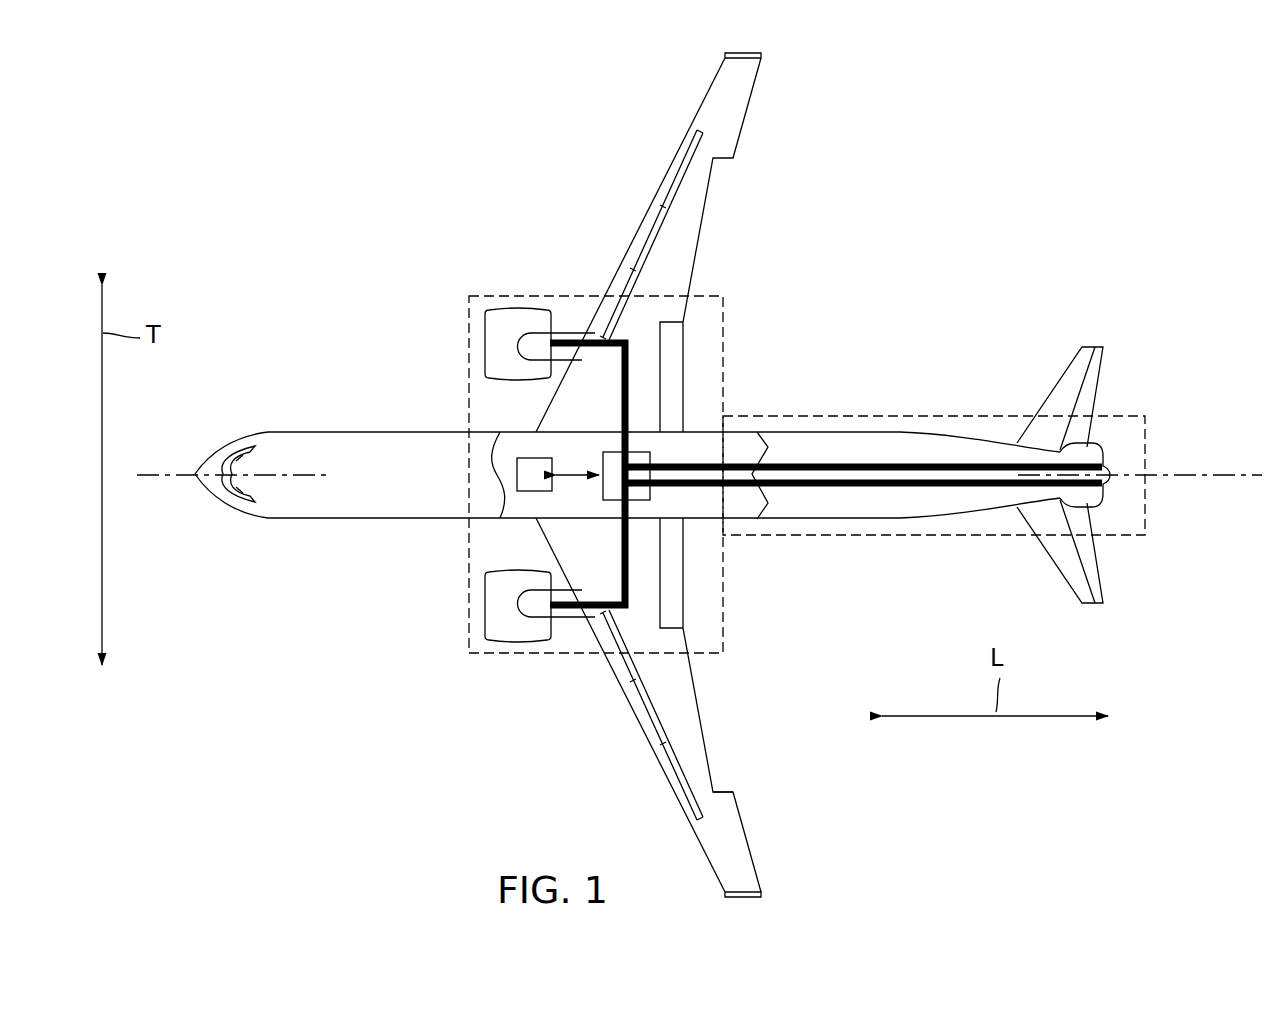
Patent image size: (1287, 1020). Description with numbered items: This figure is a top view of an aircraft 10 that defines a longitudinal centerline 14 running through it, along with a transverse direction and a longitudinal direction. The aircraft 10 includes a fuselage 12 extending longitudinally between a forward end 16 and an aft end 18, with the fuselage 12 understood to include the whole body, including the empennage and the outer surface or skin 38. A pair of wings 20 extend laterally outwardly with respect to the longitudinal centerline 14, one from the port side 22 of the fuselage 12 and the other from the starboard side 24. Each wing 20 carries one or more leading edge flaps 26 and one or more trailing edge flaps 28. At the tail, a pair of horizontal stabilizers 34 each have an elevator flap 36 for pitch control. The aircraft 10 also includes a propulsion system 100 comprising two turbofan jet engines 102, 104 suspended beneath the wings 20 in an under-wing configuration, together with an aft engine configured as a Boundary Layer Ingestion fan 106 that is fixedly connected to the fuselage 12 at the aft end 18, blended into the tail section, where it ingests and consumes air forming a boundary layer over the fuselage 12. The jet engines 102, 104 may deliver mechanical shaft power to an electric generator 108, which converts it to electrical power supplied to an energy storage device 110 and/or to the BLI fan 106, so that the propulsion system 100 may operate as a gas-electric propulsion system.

The aircraft 10 is at (937, 213).
The fuselage 12 is at (591, 474).
The longitudinal centerline 14 is at (160, 470).
The forward end 16 is at (194, 481).
The aft end 18 is at (1044, 567).
The wings 20 is at (684, 475).
The port side 22 is at (374, 534).
The starboard side 24 is at (357, 414).
The leading edge flaps 26 is at (640, 730).
The trailing edge flaps 28 is at (735, 735).
The horizontal stabilizers 34 is at (1082, 362).
The elevator flap 36 is at (1102, 365).
The outer surface or skin 38 is at (883, 490).
The propulsion system 100 is at (886, 415).
The turbofan jet engine 102 is at (512, 620).
The turbofan jet engine 104 is at (512, 326).
The Boundary Layer Ingestion fan 106 is at (1096, 438).
The electric generator 108 is at (650, 455).
The energy storage device 110 is at (517, 493).